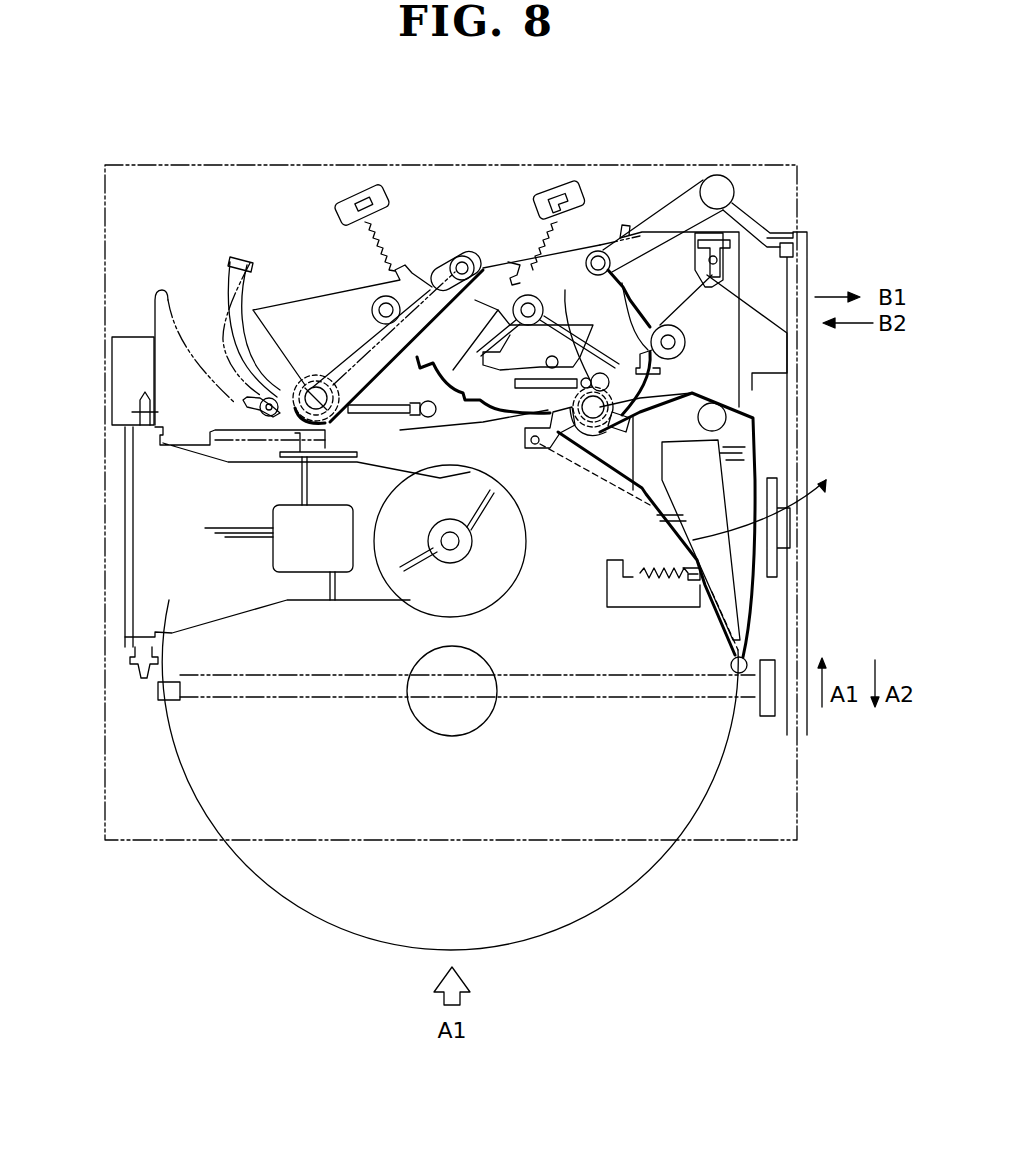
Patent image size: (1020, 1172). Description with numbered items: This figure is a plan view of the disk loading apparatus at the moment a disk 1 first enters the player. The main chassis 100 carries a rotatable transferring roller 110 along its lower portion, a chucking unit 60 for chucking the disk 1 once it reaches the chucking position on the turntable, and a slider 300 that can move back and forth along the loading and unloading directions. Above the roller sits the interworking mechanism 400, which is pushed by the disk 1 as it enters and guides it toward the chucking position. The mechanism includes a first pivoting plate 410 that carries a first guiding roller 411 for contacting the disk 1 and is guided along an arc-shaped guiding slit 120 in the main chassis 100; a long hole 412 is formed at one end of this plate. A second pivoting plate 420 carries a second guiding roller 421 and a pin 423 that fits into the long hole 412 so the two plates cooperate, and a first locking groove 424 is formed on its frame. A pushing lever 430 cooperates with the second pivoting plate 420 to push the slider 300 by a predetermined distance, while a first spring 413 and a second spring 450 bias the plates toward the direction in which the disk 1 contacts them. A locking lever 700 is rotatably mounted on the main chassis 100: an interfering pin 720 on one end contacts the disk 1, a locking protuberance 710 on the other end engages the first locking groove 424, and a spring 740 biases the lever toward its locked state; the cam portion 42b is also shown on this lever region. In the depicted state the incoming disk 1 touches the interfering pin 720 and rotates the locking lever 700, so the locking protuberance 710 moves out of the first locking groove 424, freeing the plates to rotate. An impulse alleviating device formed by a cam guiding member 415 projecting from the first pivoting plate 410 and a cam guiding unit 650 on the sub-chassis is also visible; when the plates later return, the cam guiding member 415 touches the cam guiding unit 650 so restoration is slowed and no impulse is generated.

The disk 1 is at (596, 898).
The main chassis 100 is at (764, 846).
The transferring roller 110 is at (628, 699).
The guiding slit 120 is at (250, 263).
The slider 300 is at (803, 433).
The interworking mechanism 400 is at (310, 147).
The first pivoting plate 410 is at (313, 300).
The first guiding roller 411 is at (315, 375).
The long hole 412 is at (430, 262).
The first spring 413 is at (371, 182).
The cam guiding member 415 is at (257, 398).
The second pivoting plate 420 is at (565, 290).
The second guiding roller 421 is at (633, 312).
The pin 423 is at (458, 256).
The first locking groove 424 is at (528, 268).
The cam slot 42b is at (683, 397).
The pushing lever 430 is at (676, 190).
The second spring 450 is at (585, 410).
The chucking unit 60 is at (147, 603).
The cam guiding unit 650 is at (158, 292).
The locking lever 700 is at (742, 593).
The locking protuberance 710 is at (555, 430).
The interfering pin 720 is at (748, 690).
The spring 740 is at (667, 565).